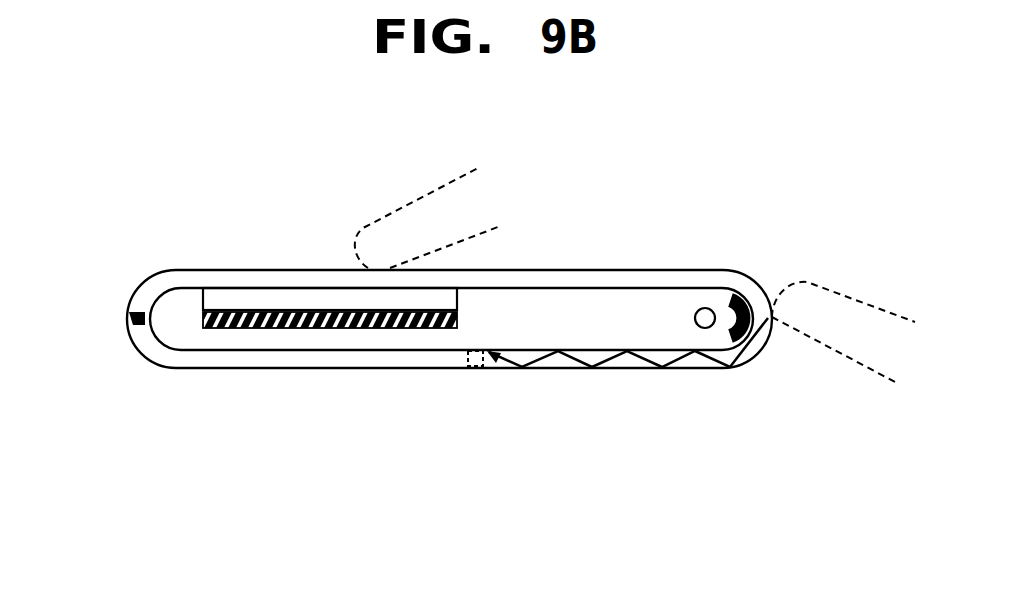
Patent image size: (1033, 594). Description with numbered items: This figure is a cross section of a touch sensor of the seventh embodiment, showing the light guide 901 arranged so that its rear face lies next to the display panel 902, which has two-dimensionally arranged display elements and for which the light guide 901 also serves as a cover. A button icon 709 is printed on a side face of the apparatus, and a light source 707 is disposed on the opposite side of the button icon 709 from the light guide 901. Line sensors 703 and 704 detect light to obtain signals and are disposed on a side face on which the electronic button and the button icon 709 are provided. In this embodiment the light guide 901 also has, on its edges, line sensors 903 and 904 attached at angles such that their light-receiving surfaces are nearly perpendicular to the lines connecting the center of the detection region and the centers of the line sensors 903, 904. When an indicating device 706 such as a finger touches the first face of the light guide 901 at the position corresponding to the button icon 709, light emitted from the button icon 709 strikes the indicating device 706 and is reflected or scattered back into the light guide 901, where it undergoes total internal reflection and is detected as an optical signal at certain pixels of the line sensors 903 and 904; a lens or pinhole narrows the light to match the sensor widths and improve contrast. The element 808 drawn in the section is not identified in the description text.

The light guide 901 is at (148, 290).
The display panel 902 is at (302, 297).
The line sensor 703 is at (128, 313).
The line sensor 704 is at (282, 330).
The indicating device 706 is at (392, 211).
The light source 707 is at (704, 328).
The button icon 709 is at (728, 298).
The spring 808 is at (643, 358).
The line sensor 903 is at (477, 366).
The line sensor 904 is at (475, 358).